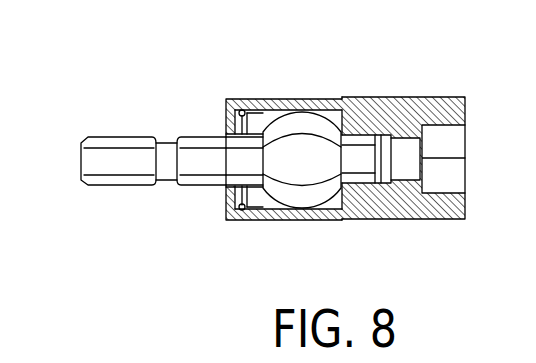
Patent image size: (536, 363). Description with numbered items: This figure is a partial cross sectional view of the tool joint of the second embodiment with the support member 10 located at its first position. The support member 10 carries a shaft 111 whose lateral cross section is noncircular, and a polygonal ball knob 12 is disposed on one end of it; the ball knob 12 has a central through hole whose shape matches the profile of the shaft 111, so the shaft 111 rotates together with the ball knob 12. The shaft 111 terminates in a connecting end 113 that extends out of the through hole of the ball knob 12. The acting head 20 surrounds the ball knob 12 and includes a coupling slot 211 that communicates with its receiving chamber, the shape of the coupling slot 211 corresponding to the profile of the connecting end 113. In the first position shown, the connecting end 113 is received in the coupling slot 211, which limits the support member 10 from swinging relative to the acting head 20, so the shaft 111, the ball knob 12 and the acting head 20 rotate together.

The support member 10 is at (187, 156).
The shaft 111 is at (240, 167).
The polygonal ball knob 12 is at (301, 150).
The connecting end 113 is at (370, 158).
The acting head 20 is at (398, 112).
The coupling slot 211 is at (368, 185).